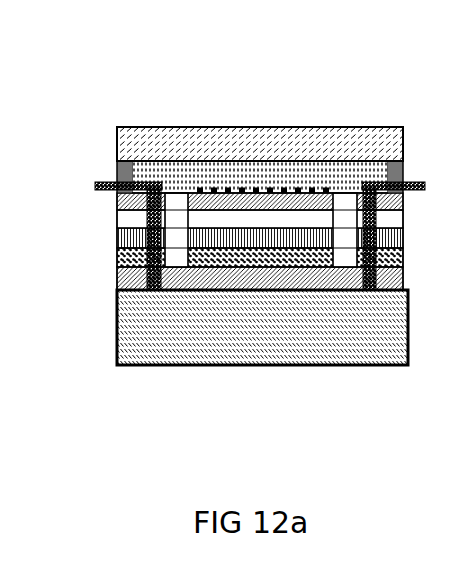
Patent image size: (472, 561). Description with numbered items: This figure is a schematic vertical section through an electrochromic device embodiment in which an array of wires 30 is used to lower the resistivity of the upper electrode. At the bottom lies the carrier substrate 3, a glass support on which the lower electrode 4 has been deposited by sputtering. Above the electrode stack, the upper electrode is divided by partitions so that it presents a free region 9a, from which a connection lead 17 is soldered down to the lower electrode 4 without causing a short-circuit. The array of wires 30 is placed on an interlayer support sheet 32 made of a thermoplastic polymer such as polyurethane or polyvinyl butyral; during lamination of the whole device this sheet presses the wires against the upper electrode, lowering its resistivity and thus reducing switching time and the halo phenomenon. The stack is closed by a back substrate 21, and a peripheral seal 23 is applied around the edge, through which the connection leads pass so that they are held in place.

The carrier substrate 3 is at (302, 350).
The lower electrode 4 is at (390, 277).
The free region of the upper electrode 9a is at (390, 195).
The connection lead 17 is at (387, 230).
The back substrate 21 is at (352, 148).
The seal 23 is at (121, 171).
The array of wires 30 is at (205, 188).
The interlayer support sheet 32 is at (172, 182).